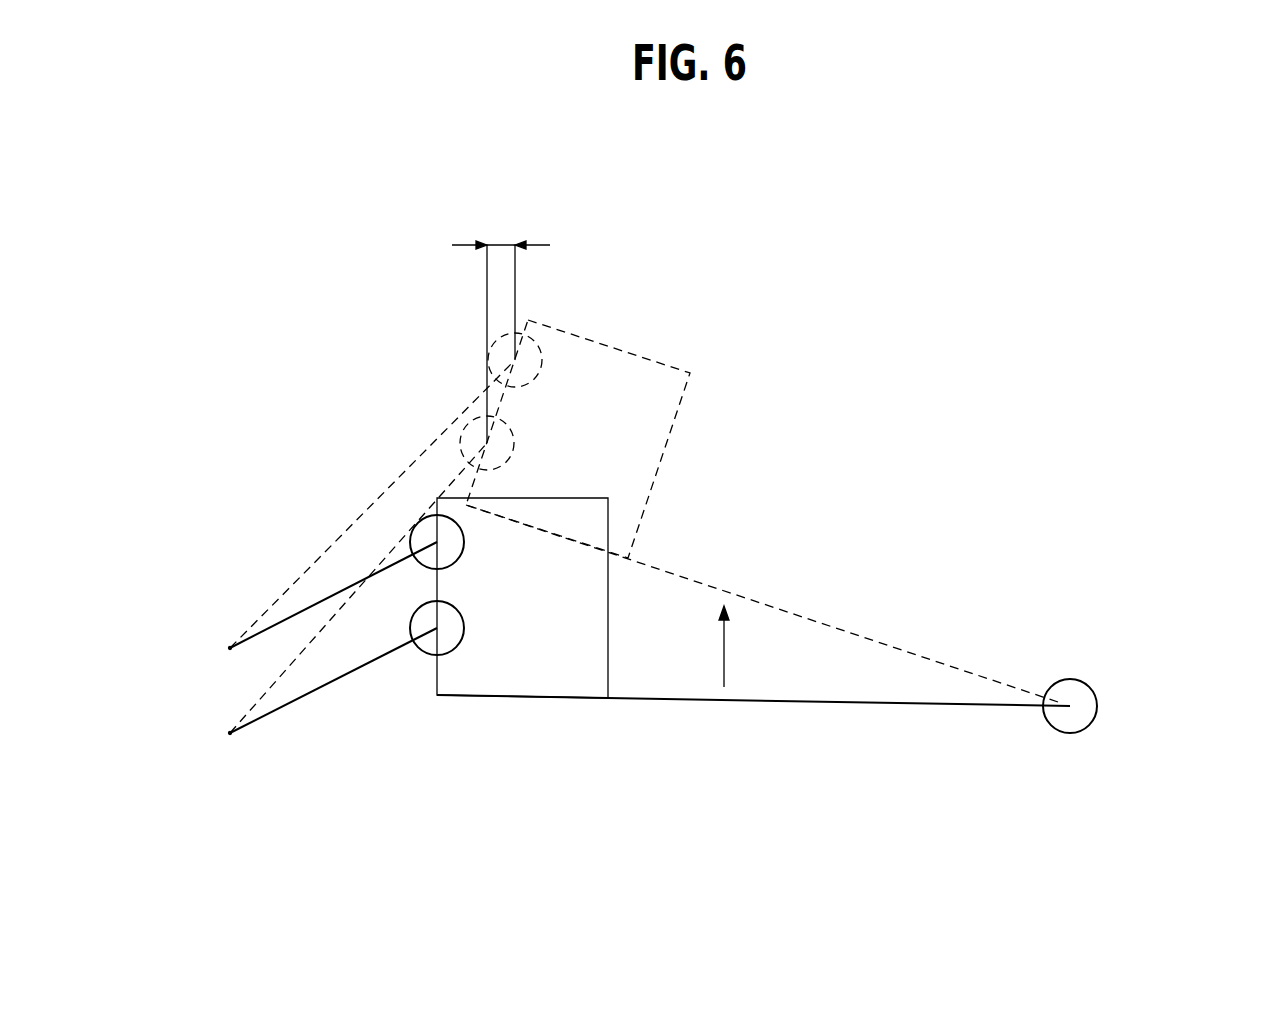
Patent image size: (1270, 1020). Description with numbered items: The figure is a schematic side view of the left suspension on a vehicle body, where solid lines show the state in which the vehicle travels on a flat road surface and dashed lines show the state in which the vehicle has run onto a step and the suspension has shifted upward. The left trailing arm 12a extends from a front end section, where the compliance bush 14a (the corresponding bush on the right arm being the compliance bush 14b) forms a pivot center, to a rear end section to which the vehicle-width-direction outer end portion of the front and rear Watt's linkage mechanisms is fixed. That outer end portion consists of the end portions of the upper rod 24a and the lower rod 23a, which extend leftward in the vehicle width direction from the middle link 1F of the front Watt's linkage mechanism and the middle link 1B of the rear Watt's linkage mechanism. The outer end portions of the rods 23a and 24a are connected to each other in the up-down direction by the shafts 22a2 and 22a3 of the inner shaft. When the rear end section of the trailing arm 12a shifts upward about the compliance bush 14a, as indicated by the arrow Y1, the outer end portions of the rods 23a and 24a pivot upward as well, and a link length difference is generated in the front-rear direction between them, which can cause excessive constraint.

The middle link 1F is at (230, 648).
The middle link 1B is at (230, 733).
The shaft 22a2 is at (465, 542).
The shaft 22a3 is at (465, 628).
The lower rod 23a is at (337, 612).
The upper rod 24a is at (345, 585).
The left trailing arm 12a is at (892, 647).
The compliance bush 14a is at (1141, 706).
The compliance bush 14b is at (1097, 706).
The direction Y1 is at (726, 648).